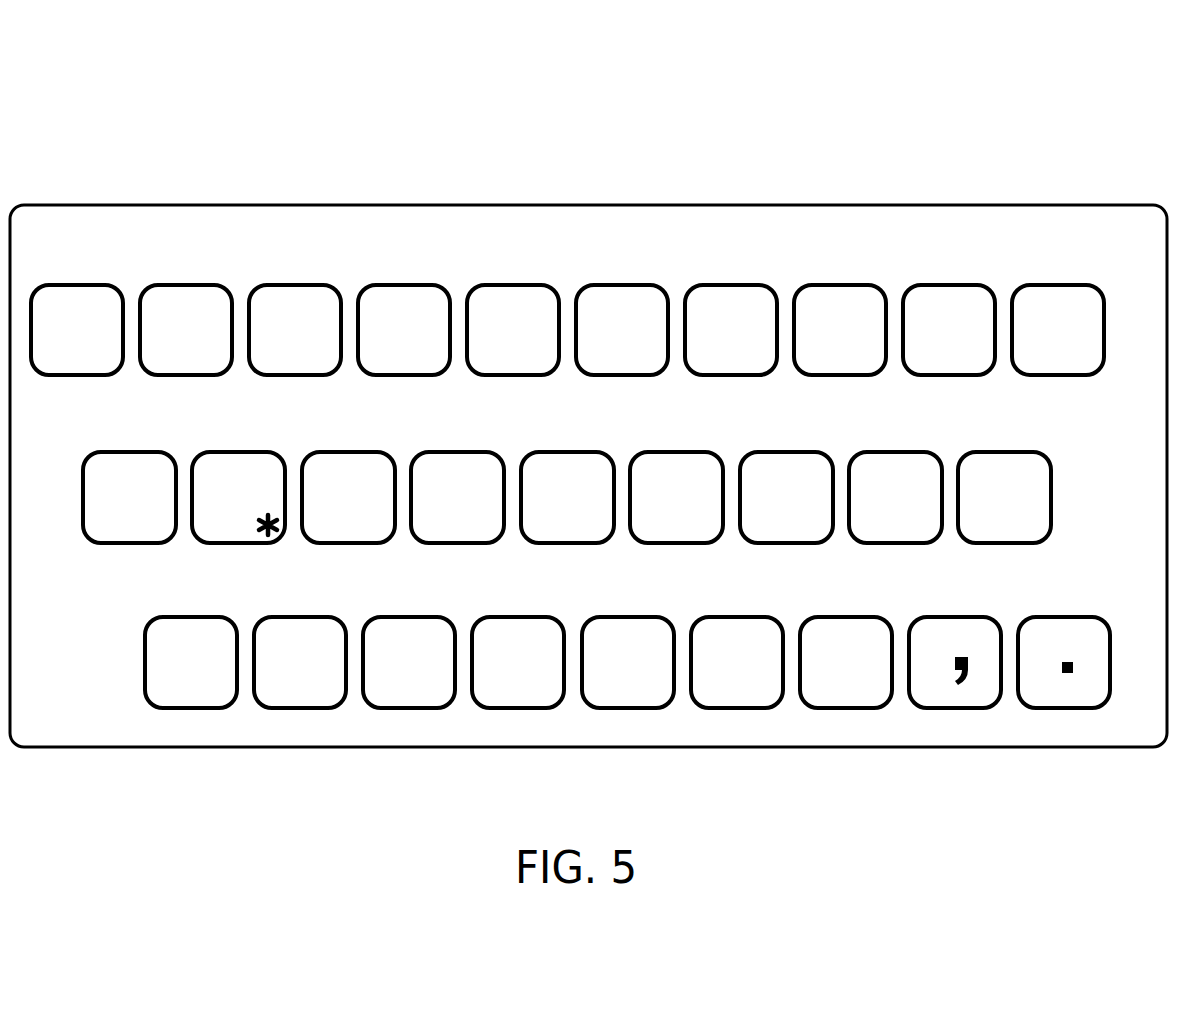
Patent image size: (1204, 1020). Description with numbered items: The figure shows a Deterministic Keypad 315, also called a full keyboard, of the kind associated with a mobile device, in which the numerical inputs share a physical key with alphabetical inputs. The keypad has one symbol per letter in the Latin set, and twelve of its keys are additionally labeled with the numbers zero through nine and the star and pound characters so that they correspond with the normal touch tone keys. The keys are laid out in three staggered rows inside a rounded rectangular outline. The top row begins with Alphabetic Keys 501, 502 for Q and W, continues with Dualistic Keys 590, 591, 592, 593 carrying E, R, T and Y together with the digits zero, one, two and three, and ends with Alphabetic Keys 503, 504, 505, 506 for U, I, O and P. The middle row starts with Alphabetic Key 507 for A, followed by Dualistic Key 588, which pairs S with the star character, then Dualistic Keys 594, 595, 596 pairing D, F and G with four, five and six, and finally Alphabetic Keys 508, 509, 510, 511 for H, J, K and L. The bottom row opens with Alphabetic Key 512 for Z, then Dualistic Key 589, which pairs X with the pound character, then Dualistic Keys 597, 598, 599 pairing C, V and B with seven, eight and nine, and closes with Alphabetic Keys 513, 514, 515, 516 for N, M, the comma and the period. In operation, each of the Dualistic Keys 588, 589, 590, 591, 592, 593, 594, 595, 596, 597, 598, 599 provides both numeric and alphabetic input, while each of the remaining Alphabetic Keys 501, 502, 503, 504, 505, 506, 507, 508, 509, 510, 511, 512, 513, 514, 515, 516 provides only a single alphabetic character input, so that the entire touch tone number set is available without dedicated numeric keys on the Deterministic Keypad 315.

The Deterministic Keypad 315 is at (78, 135).
The Alphabetic Key 501 is at (91, 285).
The Alphabetic Key 502 is at (208, 285).
The Dualistic Key 590 is at (317, 285).
The Dualistic Key 591 is at (426, 285).
The Dualistic Key 592 is at (535, 285).
The Dualistic Key 593 is at (644, 285).
The Alphabetic Key 503 is at (753, 285).
The Alphabetic Key 504 is at (862, 285).
The Alphabetic Key 505 is at (971, 285).
The Alphabetic Key 506 is at (1080, 285).
The Alphabetic Key 507 is at (153, 452).
The Dualistic Key 588 is at (262, 452).
The Dualistic Key 594 is at (372, 452).
The Dualistic Key 595 is at (481, 452).
The Dualistic Key 596 is at (591, 452).
The Alphabetic Key 508 is at (700, 452).
The Alphabetic Key 509 is at (810, 452).
The Alphabetic Key 510 is at (919, 452).
The Alphabetic Key 511 is at (1028, 452).
The Alphabetic Key 512 is at (208, 617).
The Dualistic Key 589 is at (317, 617).
The Dualistic Key 597 is at (426, 617).
The Dualistic Key 598 is at (535, 617).
The Dualistic Key 599 is at (645, 617).
The Alphabetic Key 513 is at (754, 617).
The Alphabetic Key 514 is at (863, 617).
The Alphabetic Key 515 is at (972, 617).
The Alphabetic Key 516 is at (1081, 617).